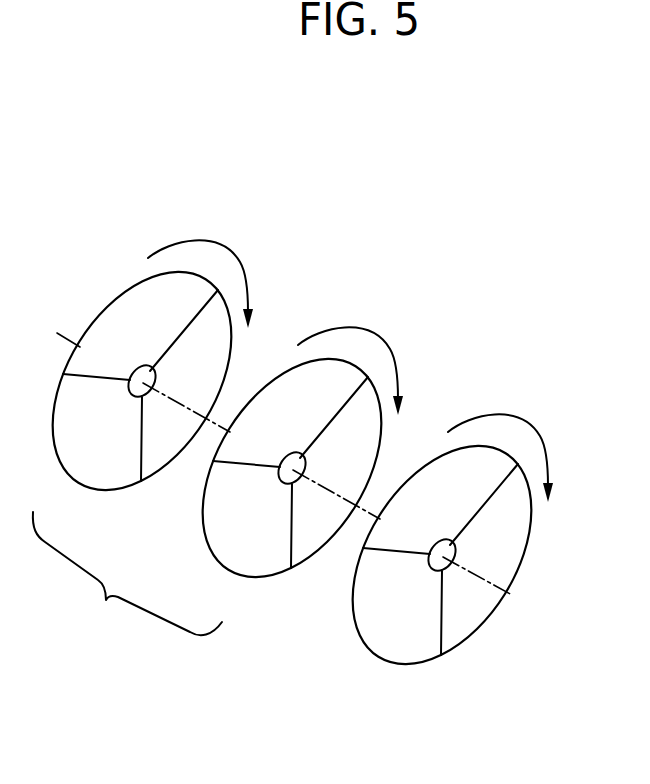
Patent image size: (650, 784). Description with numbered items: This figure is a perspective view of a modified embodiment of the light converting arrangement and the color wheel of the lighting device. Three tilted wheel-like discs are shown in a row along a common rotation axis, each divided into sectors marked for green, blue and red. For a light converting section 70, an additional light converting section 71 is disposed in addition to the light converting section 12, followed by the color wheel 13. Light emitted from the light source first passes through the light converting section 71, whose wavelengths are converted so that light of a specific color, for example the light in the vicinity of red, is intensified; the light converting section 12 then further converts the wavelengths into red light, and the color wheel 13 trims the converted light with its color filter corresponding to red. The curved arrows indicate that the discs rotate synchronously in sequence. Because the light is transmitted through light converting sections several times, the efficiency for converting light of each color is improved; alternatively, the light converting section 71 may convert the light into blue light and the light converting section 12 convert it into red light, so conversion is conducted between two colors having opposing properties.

The light converting section 70 is at (127, 577).
The light converting section 71 is at (111, 301).
The light converting section 12 is at (277, 378).
The color wheel 13 is at (431, 460).